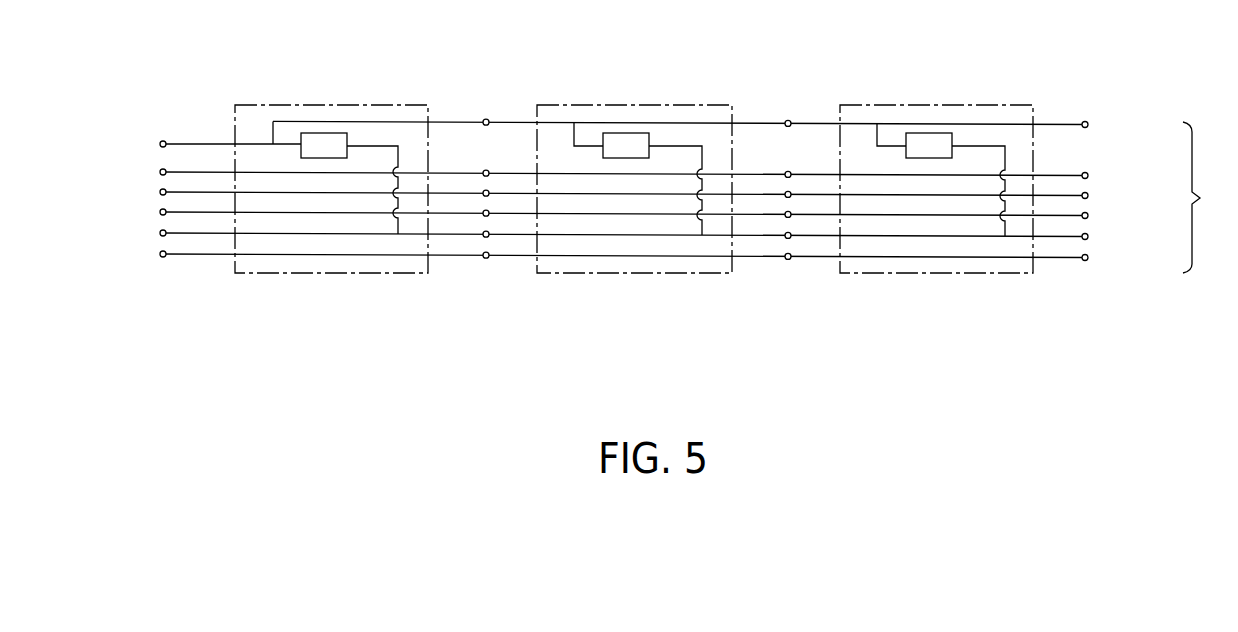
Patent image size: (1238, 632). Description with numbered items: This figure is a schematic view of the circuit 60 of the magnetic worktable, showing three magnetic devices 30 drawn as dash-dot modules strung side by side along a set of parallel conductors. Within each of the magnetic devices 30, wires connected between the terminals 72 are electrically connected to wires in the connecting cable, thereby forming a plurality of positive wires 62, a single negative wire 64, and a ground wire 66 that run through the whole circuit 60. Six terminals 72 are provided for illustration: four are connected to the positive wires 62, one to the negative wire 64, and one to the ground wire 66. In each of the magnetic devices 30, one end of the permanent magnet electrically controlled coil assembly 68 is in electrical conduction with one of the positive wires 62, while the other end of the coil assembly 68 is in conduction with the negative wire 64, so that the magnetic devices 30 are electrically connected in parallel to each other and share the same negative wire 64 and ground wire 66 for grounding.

The magnetic device 30 is at (409, 104).
The circuit 60 is at (1207, 197).
The positive wire 62 is at (1044, 123).
The negative wire 64 is at (1050, 236).
The ground wire 66 is at (1043, 259).
The permanent magnet electrically controlled coil assembly 68 is at (331, 133).
The terminal 72 is at (163, 257).